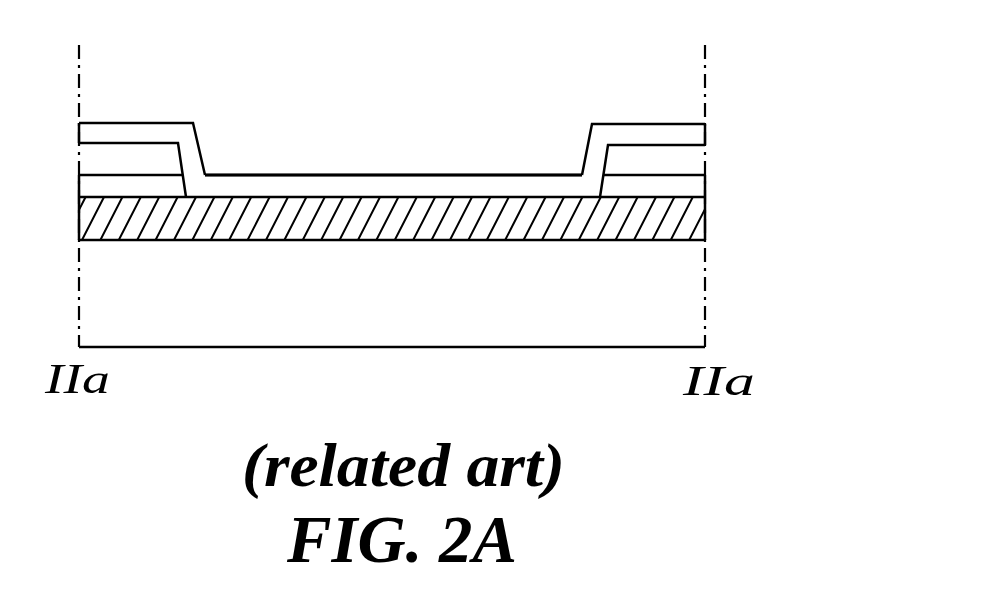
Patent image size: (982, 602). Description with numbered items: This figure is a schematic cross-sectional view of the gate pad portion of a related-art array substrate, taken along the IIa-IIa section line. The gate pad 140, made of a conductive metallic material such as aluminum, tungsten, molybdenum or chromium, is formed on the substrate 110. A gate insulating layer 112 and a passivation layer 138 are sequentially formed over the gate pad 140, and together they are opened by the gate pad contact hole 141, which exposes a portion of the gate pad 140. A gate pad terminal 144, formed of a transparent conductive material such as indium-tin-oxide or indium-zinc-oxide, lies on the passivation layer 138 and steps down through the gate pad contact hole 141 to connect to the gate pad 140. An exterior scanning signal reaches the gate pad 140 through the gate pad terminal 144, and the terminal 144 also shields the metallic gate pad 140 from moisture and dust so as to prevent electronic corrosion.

The substrate 110 is at (422, 313).
The gate insulating layer 112 is at (695, 183).
The passivation layer 138 is at (695, 156).
The gate pad 140 is at (508, 197).
The gate pad contact hole 141 is at (307, 124).
The gate pad terminal 144 is at (640, 130).